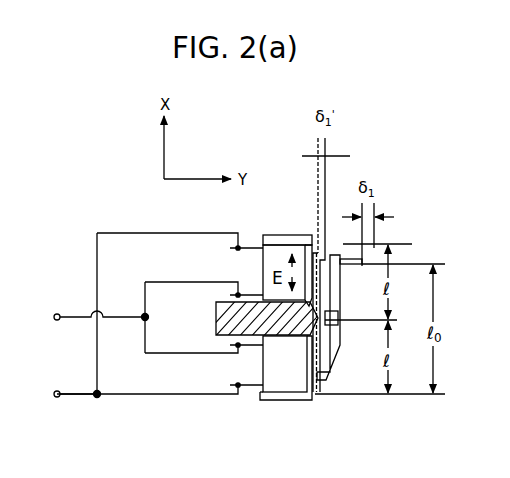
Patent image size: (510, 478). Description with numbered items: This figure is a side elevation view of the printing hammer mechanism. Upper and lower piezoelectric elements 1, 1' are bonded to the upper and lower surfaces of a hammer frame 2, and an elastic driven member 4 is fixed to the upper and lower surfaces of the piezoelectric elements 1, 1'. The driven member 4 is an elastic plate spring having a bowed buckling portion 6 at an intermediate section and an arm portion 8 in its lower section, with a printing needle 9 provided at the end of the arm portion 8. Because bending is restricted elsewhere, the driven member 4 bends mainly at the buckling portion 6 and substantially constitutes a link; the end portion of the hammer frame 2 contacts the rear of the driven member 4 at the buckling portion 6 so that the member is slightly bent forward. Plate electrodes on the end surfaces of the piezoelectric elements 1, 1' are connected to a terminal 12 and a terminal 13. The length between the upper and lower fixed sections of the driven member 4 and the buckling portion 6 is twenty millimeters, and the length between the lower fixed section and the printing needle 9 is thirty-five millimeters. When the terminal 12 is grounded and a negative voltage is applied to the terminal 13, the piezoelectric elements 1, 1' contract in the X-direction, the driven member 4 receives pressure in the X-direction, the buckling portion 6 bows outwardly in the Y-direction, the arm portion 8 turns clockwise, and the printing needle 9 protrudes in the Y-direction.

The piezoelectric element 1 is at (287, 244).
The piezoelectric element 1' is at (276, 386).
The hammer frame 2 is at (216, 312).
The elastic driven member 4 is at (309, 362).
The buckling portion 6 is at (317, 397).
The arm portion 8 is at (342, 349).
The printing needle 9 is at (361, 258).
The terminal 12 is at (55, 397).
The terminal 13 is at (55, 313).